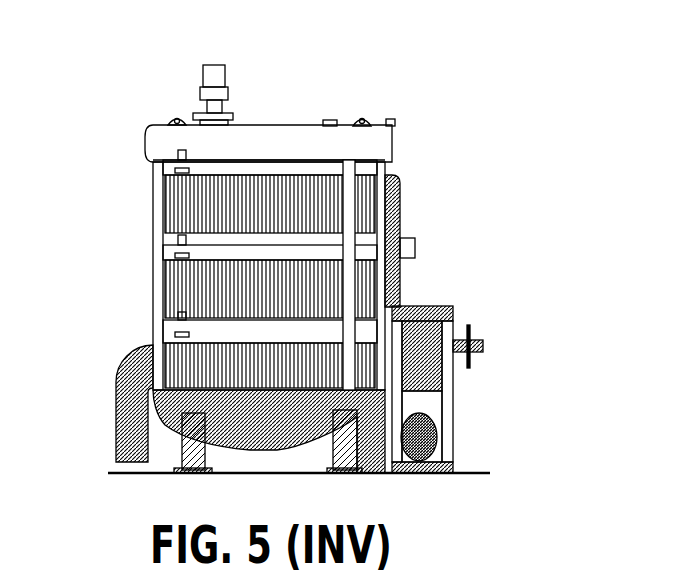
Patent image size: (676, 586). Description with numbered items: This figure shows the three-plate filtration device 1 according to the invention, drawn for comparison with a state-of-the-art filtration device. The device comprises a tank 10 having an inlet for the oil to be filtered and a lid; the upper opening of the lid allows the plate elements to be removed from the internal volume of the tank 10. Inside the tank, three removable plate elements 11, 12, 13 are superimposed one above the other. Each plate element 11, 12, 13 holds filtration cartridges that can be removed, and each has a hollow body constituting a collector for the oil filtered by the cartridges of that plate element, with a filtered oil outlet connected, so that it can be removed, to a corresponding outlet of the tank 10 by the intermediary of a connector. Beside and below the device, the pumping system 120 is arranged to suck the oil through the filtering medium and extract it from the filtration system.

The three-plate filtration device 1 is at (291, 246).
The tank 10 is at (388, 168).
The plate element 11 is at (128, 199).
The plate element 12 is at (128, 282).
The plate element 13 is at (113, 359).
The pumping system 120 is at (470, 286).